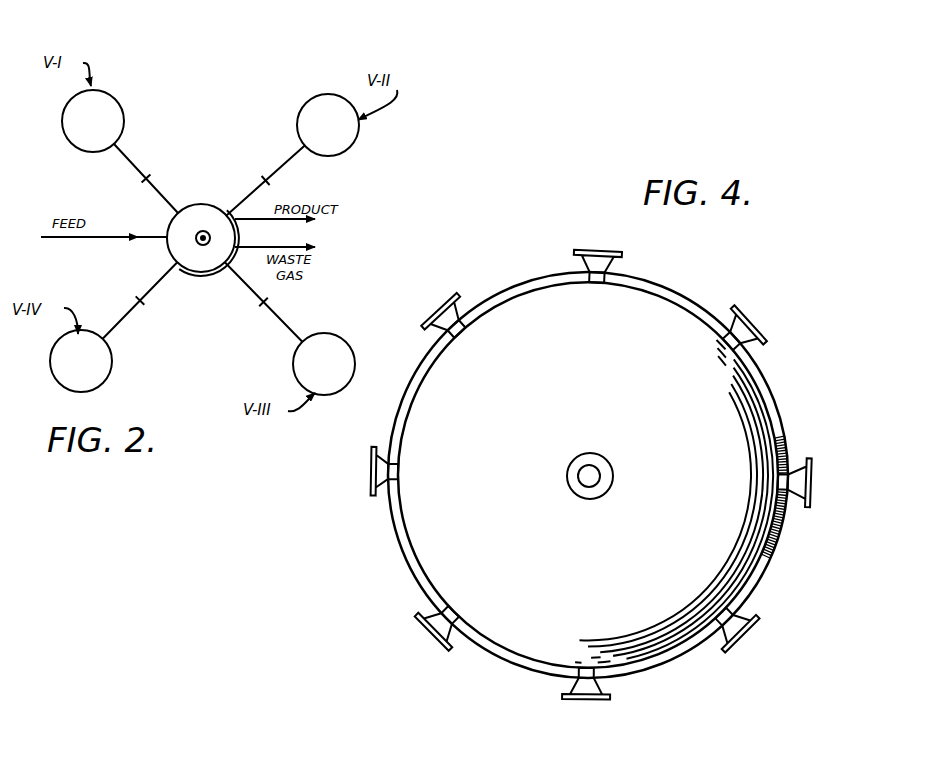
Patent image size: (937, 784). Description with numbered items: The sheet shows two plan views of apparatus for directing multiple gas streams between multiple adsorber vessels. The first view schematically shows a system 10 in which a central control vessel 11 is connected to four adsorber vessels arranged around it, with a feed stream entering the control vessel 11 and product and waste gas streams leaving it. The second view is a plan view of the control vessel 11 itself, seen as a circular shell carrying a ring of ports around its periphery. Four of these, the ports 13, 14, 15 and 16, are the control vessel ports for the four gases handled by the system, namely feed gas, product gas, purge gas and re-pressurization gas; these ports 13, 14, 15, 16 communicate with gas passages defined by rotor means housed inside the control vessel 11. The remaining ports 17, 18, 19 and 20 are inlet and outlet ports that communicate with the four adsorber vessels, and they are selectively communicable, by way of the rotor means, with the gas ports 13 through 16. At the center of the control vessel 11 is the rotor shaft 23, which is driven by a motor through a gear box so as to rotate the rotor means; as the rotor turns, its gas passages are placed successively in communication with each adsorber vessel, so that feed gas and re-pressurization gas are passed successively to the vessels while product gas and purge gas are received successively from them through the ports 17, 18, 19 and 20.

In FIG. 2, the system 10 is at (202, 283).
In FIG. 2, the control vessel 11 is at (204, 204).
In FIG. 4, the control vessel 11 is at (427, 567).
In FIG. 4, the control vessel port 13 is at (457, 312).
In FIG. 4, the control vessel port 14 is at (745, 640).
In FIG. 4, the control vessel port 15 is at (438, 648).
In FIG. 4, the control vessel port 16 is at (767, 340).
In FIG. 4, the inlet and outlet port 17 is at (623, 254).
In FIG. 4, the inlet and outlet port 18 is at (812, 505).
In FIG. 4, the inlet and outlet port 19 is at (593, 699).
In FIG. 4, the inlet and outlet port 20 is at (370, 484).
In FIG. 4, the rotor shaft 23 is at (591, 482).